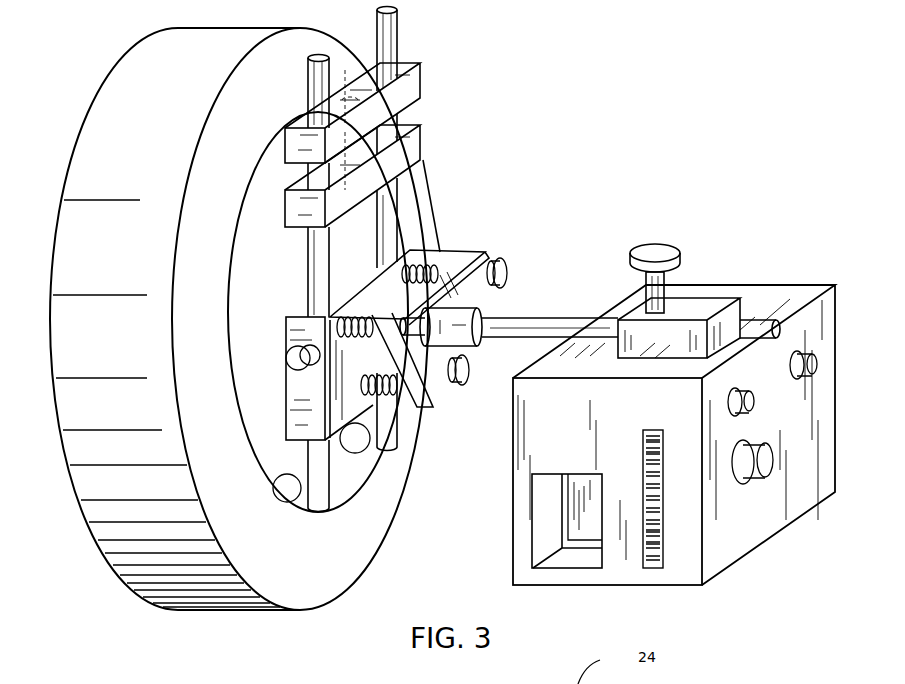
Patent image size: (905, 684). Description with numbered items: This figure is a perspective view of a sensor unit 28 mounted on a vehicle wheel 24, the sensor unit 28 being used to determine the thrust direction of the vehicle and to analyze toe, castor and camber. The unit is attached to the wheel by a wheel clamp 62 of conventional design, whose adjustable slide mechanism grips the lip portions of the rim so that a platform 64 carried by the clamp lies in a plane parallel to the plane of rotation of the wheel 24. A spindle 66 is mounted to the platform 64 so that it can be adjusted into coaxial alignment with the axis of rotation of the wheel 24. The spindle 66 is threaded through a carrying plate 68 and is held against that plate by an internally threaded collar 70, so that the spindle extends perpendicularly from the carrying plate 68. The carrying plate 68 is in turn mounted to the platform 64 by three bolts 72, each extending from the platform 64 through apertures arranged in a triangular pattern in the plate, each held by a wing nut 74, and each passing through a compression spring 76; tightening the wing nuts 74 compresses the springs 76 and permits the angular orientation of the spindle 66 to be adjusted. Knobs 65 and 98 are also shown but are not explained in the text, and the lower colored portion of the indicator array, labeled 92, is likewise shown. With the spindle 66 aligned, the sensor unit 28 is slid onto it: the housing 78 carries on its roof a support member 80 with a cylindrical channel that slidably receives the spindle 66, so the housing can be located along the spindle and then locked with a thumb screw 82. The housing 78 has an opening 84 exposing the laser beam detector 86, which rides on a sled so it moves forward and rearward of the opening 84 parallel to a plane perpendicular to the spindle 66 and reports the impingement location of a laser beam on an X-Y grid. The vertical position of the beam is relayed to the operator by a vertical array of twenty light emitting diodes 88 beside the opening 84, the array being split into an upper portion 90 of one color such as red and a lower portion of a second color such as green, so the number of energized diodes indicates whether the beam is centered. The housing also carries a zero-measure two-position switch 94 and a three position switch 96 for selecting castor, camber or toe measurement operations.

The wheel 24 is at (118, 149).
The sensor unit 28 is at (672, 382).
The wheel clamp 62 is at (430, 142).
The platform 64 is at (288, 393).
The locking knob 65 is at (288, 356).
The spindle 66 is at (556, 318).
The carrying plate 68 is at (468, 360).
The internally threaded collar 70 is at (482, 306).
The bolts 72 is at (400, 342).
The wing nut 74 is at (503, 267).
The compression spring 76 is at (433, 263).
The housing 78 is at (514, 448).
The support member 80 is at (772, 286).
The thumb screw 82 is at (660, 246).
The opening 84 is at (545, 500).
The laser beam detector 86 is at (570, 525).
The light emitting diodes 88 is at (645, 462).
The upper portion 90 is at (660, 440).
The scale marking 92 is at (660, 530).
The zero-measure two-position switch 94 is at (752, 402).
The three position switch 96 is at (770, 461).
The control knob 98 is at (815, 366).